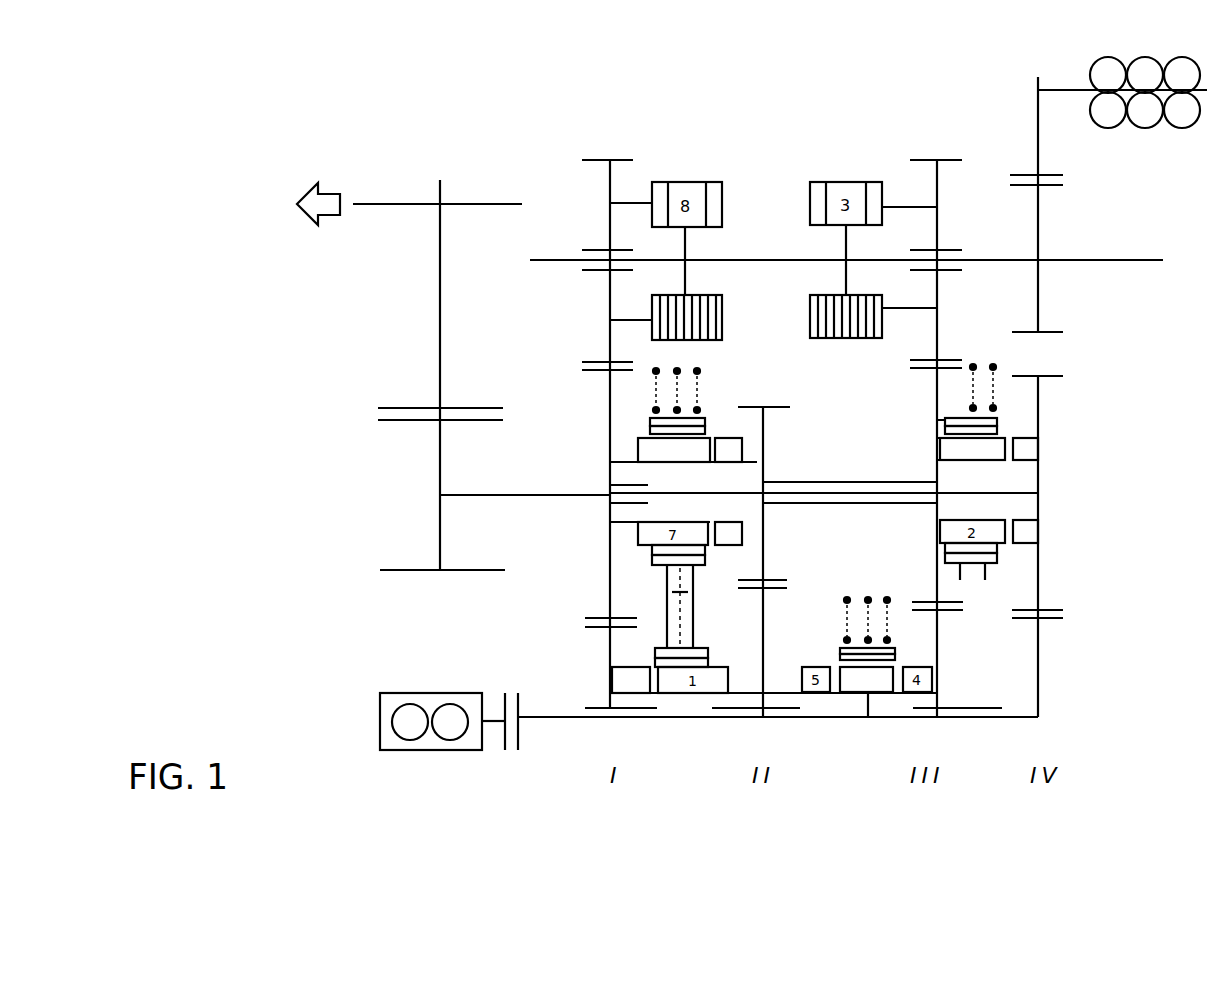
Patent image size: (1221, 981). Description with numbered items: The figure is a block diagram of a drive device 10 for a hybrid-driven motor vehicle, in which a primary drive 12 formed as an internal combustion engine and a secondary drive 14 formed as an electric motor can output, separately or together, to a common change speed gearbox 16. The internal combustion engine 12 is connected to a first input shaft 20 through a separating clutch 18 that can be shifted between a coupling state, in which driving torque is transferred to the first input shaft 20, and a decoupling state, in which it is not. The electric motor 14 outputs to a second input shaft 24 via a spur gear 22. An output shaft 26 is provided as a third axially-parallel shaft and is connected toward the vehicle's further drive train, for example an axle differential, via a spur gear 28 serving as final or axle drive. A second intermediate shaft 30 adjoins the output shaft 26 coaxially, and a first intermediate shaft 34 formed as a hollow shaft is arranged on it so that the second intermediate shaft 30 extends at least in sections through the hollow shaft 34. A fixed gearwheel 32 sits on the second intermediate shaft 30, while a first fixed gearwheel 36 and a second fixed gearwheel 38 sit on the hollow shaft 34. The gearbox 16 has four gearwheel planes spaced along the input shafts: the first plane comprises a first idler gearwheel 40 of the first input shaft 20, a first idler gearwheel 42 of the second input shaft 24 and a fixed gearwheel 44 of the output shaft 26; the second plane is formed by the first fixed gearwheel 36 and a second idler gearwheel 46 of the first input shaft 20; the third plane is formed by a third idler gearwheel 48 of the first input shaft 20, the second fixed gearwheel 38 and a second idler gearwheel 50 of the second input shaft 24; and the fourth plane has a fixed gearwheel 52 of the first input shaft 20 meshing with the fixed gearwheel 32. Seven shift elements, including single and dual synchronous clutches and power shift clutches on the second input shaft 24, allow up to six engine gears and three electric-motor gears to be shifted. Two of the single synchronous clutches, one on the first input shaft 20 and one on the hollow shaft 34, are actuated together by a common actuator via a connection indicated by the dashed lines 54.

The drive device 10 is at (498, 168).
The primary drive 12 is at (423, 688).
The secondary drive 14 is at (1165, 137).
The gearbox 16 is at (1068, 482).
The separating clutch 18 is at (508, 688).
The first input shaft 20 is at (534, 716).
The spur gear 22 is at (1024, 164).
The second input shaft 24 is at (1088, 259).
The output shaft 26 is at (495, 493).
The spur gear 28 is at (422, 391).
The second intermediate shaft 30 is at (765, 480).
The fixed gearwheel 32 is at (1050, 602).
The first intermediate shaft 34 is at (873, 481).
The first fixed gearwheel 36 is at (775, 572).
The second fixed gearwheel 38 is at (933, 372).
The first idler gearwheel 40 is at (606, 628).
The first idler gearwheel 42 is at (605, 362).
The fixed gearwheel 44 is at (606, 376).
The second idler gearwheel 46 is at (766, 592).
The third idler gearwheel 48 is at (945, 615).
The second idler gearwheel 50 is at (940, 160).
The fixed gearwheel 52 is at (1050, 625).
The dashed lines 54 is at (706, 586).